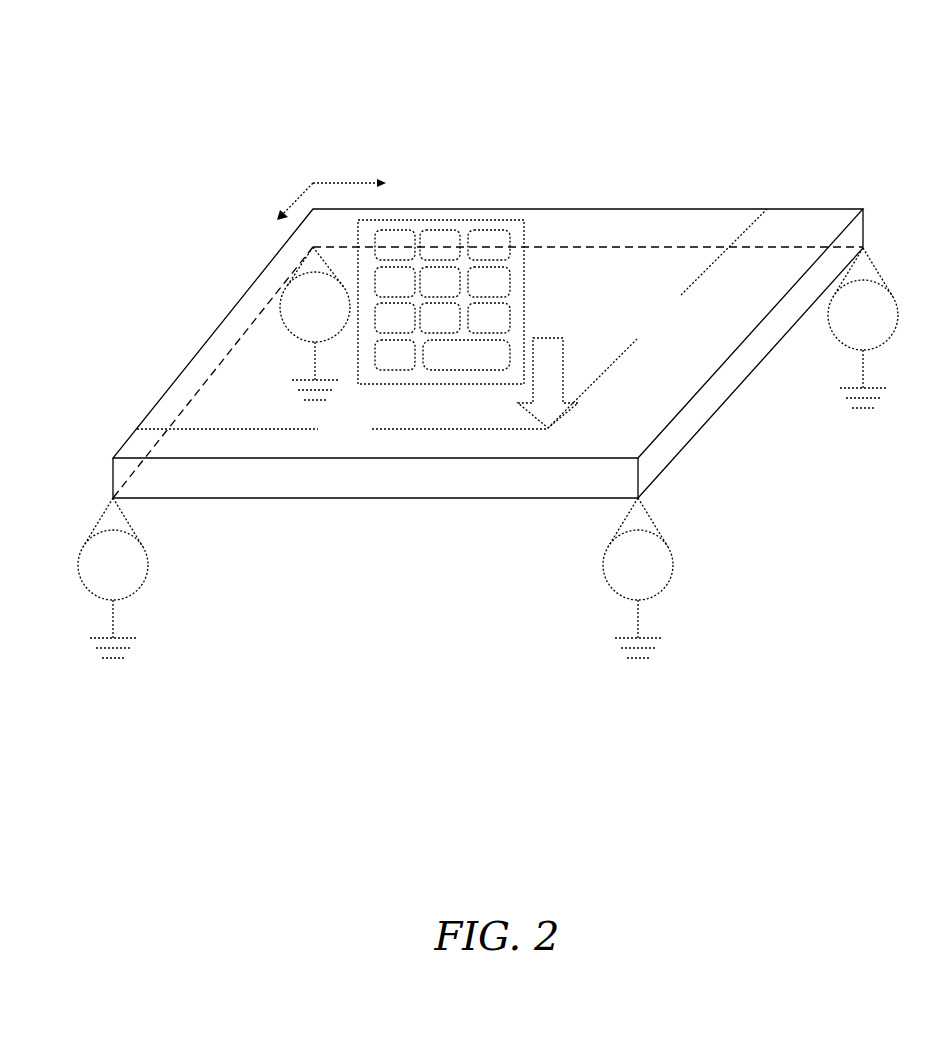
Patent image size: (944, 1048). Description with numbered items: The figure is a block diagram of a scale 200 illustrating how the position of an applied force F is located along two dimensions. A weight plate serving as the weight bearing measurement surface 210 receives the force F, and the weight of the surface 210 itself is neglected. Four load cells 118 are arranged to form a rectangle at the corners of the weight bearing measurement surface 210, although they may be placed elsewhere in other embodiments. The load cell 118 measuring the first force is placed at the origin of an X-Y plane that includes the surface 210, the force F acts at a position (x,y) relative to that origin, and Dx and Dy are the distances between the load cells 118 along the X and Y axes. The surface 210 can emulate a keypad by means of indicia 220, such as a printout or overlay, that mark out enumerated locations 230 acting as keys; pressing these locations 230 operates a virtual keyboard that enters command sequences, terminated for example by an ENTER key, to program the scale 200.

The scale 200 is at (724, 70).
The weight bearing measurement surface 210 is at (680, 218).
The indicia 220 is at (498, 220).
The enumerated locations 230 is at (395, 230).
The load cells 118 is at (285, 332).